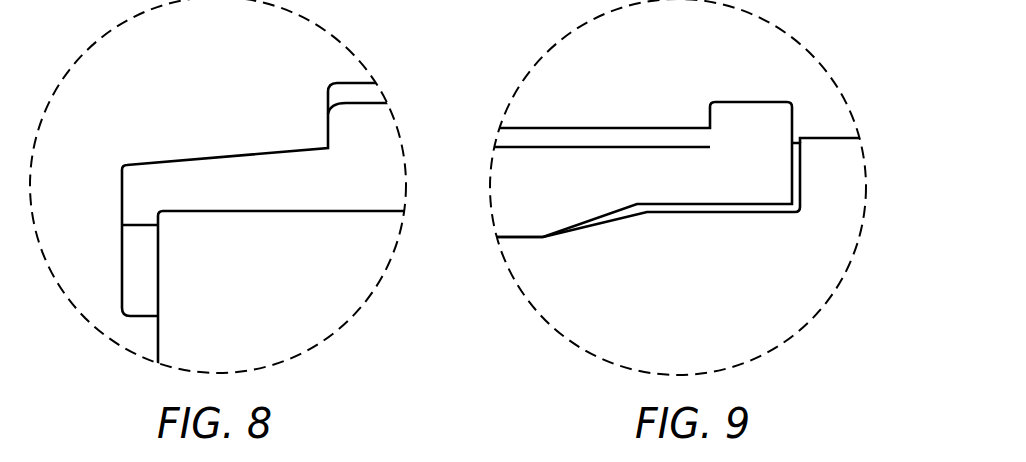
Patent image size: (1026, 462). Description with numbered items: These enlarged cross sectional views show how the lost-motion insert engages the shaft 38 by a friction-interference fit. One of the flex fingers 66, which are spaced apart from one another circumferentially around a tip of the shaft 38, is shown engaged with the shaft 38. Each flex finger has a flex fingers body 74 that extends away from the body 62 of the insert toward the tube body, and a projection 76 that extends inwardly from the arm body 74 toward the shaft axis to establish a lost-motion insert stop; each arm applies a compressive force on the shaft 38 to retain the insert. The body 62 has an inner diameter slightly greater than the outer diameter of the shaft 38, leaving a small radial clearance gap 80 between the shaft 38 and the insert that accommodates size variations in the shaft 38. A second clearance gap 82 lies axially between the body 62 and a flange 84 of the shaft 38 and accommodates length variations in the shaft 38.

In FIG. 8, the shaft 38 is at (345, 302).
In FIG. 9, the shaft 38 is at (778, 322).
In FIG. 8, the body 62 is at (387, 188).
In FIG. 9, the body 62 is at (517, 175).
In FIG. 8, the flex fingers 66 is at (143, 60).
In FIG. 8, the flex fingers body 74 is at (215, 180).
In FIG. 8, the projection 76 is at (137, 277).
In FIG. 9, the clearance gap 80 is at (759, 218).
In FIG. 9, the second clearance gap 82 is at (810, 172).
In FIG. 9, the flange 84 is at (848, 152).